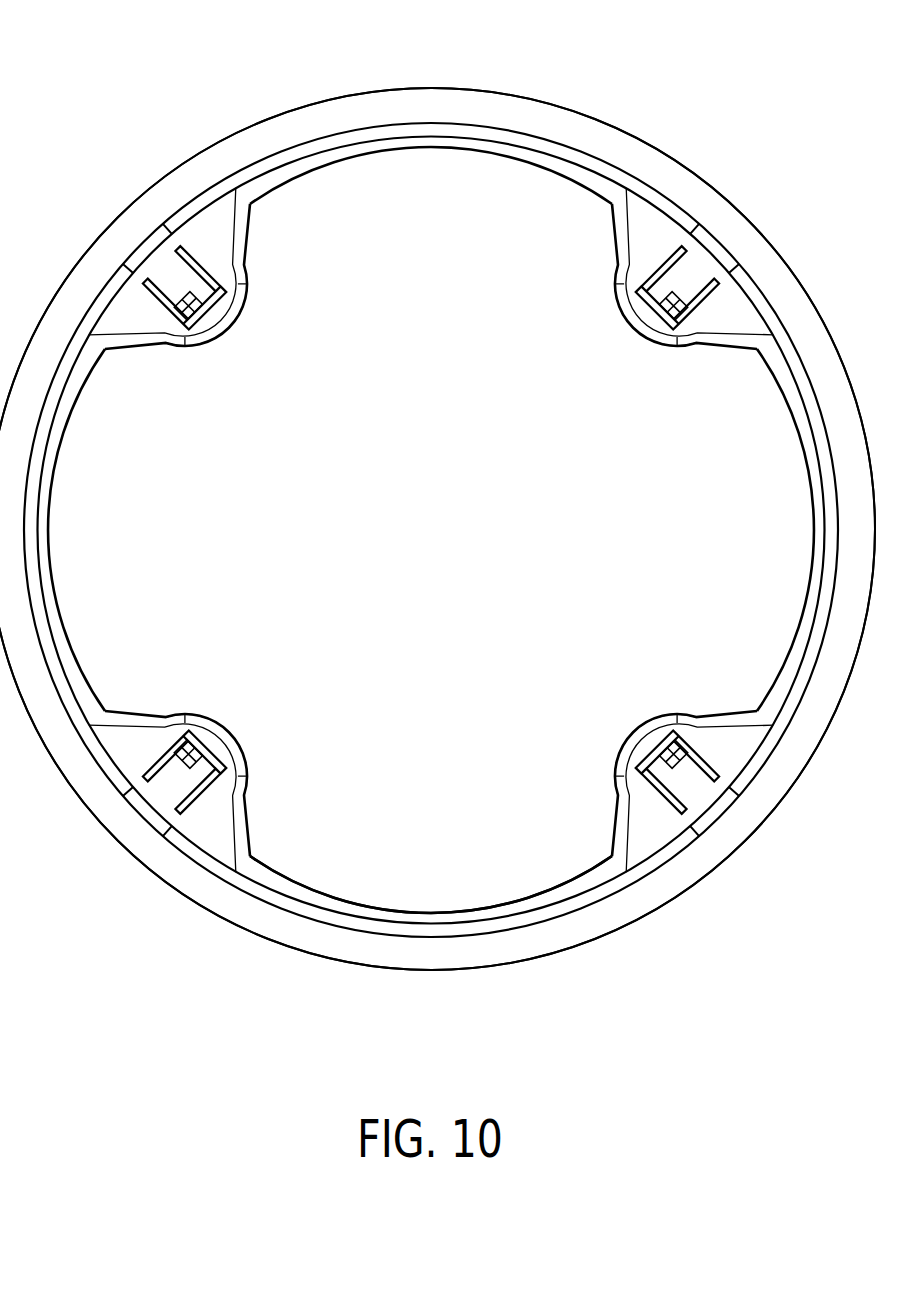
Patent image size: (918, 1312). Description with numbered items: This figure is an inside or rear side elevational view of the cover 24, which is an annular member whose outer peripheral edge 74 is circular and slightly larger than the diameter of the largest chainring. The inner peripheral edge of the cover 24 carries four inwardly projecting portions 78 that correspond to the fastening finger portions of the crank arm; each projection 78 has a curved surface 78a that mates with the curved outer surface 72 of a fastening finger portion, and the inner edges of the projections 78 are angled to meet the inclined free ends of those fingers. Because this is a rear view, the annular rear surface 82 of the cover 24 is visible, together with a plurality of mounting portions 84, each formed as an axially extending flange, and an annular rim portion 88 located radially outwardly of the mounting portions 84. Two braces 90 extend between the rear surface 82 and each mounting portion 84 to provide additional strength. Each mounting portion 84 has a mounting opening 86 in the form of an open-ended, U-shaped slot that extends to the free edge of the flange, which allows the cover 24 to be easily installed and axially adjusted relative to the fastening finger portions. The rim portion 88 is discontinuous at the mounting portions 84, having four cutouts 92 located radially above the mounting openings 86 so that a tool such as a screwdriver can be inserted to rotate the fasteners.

The cover 24 is at (713, 159).
The curved outer surface 72 is at (355, 157).
The outer peripheral edge 74 is at (305, 109).
The inwardly projecting portion 78 is at (246, 256).
The curved surface 78a is at (250, 318).
The annular rear surface 82 is at (415, 100).
The mounting portion 84 is at (186, 312).
The mounting opening 86 is at (202, 310).
The annular rim portion 88 is at (357, 904).
The brace 90 is at (196, 266).
The cutout 92 is at (145, 247).